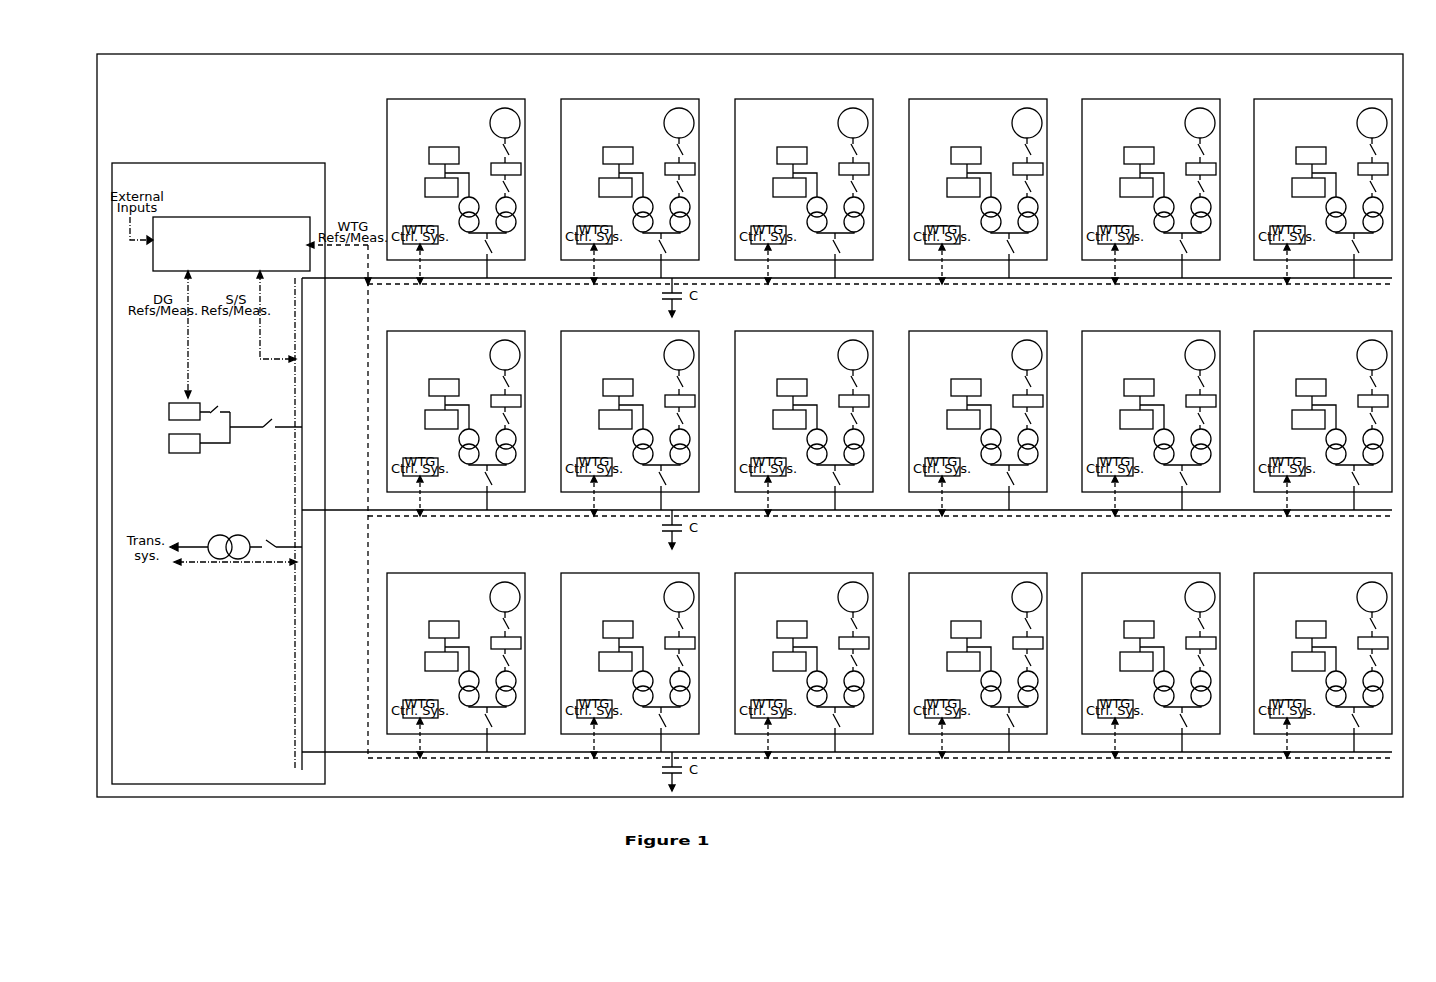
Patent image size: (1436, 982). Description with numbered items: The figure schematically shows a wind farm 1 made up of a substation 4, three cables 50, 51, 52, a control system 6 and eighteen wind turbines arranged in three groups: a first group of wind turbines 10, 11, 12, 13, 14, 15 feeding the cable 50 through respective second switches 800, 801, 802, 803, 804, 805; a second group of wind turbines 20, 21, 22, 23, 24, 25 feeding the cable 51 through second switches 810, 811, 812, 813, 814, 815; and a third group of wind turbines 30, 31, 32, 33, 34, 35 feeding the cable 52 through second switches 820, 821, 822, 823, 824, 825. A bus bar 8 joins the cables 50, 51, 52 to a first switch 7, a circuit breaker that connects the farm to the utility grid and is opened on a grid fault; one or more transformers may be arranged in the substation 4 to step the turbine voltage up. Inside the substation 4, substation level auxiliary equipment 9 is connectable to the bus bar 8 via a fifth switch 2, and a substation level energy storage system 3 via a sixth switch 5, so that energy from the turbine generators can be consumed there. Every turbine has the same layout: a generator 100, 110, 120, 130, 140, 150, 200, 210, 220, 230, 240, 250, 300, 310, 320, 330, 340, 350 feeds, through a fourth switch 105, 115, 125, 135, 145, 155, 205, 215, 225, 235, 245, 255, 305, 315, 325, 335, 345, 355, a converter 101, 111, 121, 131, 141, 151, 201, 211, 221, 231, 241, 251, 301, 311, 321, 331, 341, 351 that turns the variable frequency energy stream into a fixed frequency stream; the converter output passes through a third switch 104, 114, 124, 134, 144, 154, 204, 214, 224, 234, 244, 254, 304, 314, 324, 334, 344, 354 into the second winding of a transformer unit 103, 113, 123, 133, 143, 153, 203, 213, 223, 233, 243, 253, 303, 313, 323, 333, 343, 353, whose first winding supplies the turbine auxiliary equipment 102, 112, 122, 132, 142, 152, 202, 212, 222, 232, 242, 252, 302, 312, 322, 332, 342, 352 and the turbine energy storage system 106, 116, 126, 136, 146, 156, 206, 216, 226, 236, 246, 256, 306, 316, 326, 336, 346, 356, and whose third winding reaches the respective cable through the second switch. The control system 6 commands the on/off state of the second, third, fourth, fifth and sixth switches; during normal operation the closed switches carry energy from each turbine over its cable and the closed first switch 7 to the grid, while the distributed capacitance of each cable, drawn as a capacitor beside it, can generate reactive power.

The wind farm 1 is at (1058, 55).
The fifth switch 2 is at (266, 437).
The substation level energy storage system 3 is at (169, 443).
The substation 4 is at (233, 163).
The sixth switch 5 is at (209, 407).
The control system 6 is at (154, 262).
The first switch 7 is at (270, 556).
The bus bar 8 is at (295, 387).
The substation level auxiliary equipment 9 is at (169, 412).
The cable 50 is at (330, 279).
The cable 51 is at (328, 511).
The cable 52 is at (335, 752).
The wind turbine 10 is at (456, 164).
The wind turbine 11 is at (630, 164).
The wind turbine 12 is at (804, 164).
The wind turbine 13 is at (978, 164).
The wind turbine 14 is at (1151, 164).
The wind turbine 15 is at (1323, 164).
The wind turbine 20 is at (456, 396).
The wind turbine 21 is at (630, 396).
The wind turbine 22 is at (804, 396).
The wind turbine 23 is at (978, 396).
The wind turbine 24 is at (1151, 396).
The wind turbine 25 is at (1323, 396).
The wind turbine 30 is at (456, 638).
The wind turbine 31 is at (630, 638).
The wind turbine 32 is at (804, 638).
The wind turbine 33 is at (978, 638).
The wind turbine 34 is at (1151, 638).
The wind turbine 35 is at (1323, 638).
The generator 100 is at (492, 123).
The converter 101 is at (490, 167).
The auxiliary equipment 102 is at (425, 185).
The transformer unit 103 is at (487, 214).
The third switch 104 is at (489, 186).
The fourth switch 105 is at (489, 150).
The energy storage system 106 is at (428, 155).
The generator 110 is at (666, 123).
The converter 111 is at (664, 167).
The auxiliary equipment 112 is at (599, 185).
The transformer unit 113 is at (661, 214).
The third switch 114 is at (663, 186).
The fourth switch 115 is at (663, 150).
The energy storage system 116 is at (602, 155).
The generator 120 is at (840, 123).
The converter 121 is at (838, 167).
The auxiliary equipment 122 is at (773, 185).
The transformer unit 123 is at (835, 214).
The third switch 124 is at (837, 186).
The fourth switch 125 is at (837, 150).
The energy storage system 126 is at (776, 155).
The generator 130 is at (1014, 123).
The converter 131 is at (1012, 167).
The auxiliary equipment 132 is at (947, 185).
The transformer unit 133 is at (1009, 214).
The third switch 134 is at (1011, 186).
The fourth switch 135 is at (1011, 150).
The energy storage system 136 is at (950, 155).
The generator 140 is at (1187, 123).
The converter 141 is at (1185, 167).
The auxiliary equipment 142 is at (1120, 185).
The transformer unit 143 is at (1182, 214).
The third switch 144 is at (1184, 186).
The fourth switch 145 is at (1184, 150).
The energy storage system 146 is at (1123, 155).
The generator 150 is at (1359, 123).
The converter 151 is at (1357, 167).
The auxiliary equipment 152 is at (1292, 185).
The transformer unit 153 is at (1354, 214).
The third switch 154 is at (1356, 186).
The fourth switch 155 is at (1356, 150).
The energy storage system 156 is at (1295, 155).
The generator 200 is at (492, 355).
The converter 201 is at (490, 399).
The auxiliary equipment 202 is at (425, 417).
The transformer unit 203 is at (487, 446).
The third switch 204 is at (489, 418).
The fourth switch 205 is at (489, 382).
The energy storage system 206 is at (428, 387).
The generator 210 is at (666, 355).
The converter 211 is at (664, 399).
The auxiliary equipment 212 is at (599, 417).
The transformer unit 213 is at (661, 446).
The third switch 214 is at (663, 418).
The fourth switch 215 is at (663, 382).
The energy storage system 216 is at (602, 387).
The generator 220 is at (840, 355).
The converter 221 is at (838, 399).
The auxiliary equipment 222 is at (773, 417).
The transformer unit 223 is at (835, 446).
The third switch 224 is at (837, 418).
The fourth switch 225 is at (837, 382).
The energy storage system 226 is at (776, 387).
The generator 230 is at (1014, 355).
The converter 231 is at (1012, 399).
The auxiliary equipment 232 is at (947, 417).
The transformer unit 233 is at (1009, 446).
The third switch 234 is at (1011, 418).
The fourth switch 235 is at (1011, 382).
The energy storage system 236 is at (950, 387).
The generator 240 is at (1187, 355).
The converter 241 is at (1185, 399).
The auxiliary equipment 242 is at (1120, 417).
The transformer unit 243 is at (1182, 446).
The third switch 244 is at (1184, 418).
The fourth switch 245 is at (1184, 382).
The energy storage system 246 is at (1123, 387).
The generator 250 is at (1359, 355).
The converter 251 is at (1357, 399).
The auxiliary equipment 252 is at (1292, 417).
The transformer unit 253 is at (1354, 446).
The third switch 254 is at (1356, 418).
The fourth switch 255 is at (1356, 382).
The energy storage system 256 is at (1295, 387).
The generator 300 is at (492, 597).
The converter 301 is at (490, 641).
The auxiliary equipment 302 is at (425, 659).
The transformer unit 303 is at (487, 688).
The third switch 304 is at (489, 660).
The fourth switch 305 is at (489, 624).
The energy storage system 306 is at (428, 629).
The generator 310 is at (666, 597).
The converter 311 is at (664, 641).
The auxiliary equipment 312 is at (599, 659).
The transformer unit 313 is at (661, 688).
The third switch 314 is at (663, 660).
The fourth switch 315 is at (663, 624).
The energy storage system 316 is at (602, 629).
The generator 320 is at (840, 597).
The converter 321 is at (838, 641).
The auxiliary equipment 322 is at (773, 659).
The transformer unit 323 is at (835, 688).
The third switch 324 is at (837, 660).
The fourth switch 325 is at (837, 624).
The energy storage system 326 is at (776, 629).
The generator 330 is at (1014, 597).
The converter 331 is at (1012, 641).
The auxiliary equipment 332 is at (947, 659).
The transformer unit 333 is at (1009, 688).
The third switch 334 is at (1011, 660).
The fourth switch 335 is at (1011, 624).
The energy storage system 336 is at (950, 629).
The generator 340 is at (1187, 597).
The converter 341 is at (1185, 641).
The auxiliary equipment 342 is at (1120, 659).
The transformer unit 343 is at (1182, 688).
The third switch 344 is at (1184, 660).
The fourth switch 345 is at (1184, 624).
The energy storage system 346 is at (1123, 629).
The generator 350 is at (1359, 597).
The converter 351 is at (1357, 641).
The auxiliary equipment 352 is at (1292, 659).
The transformer unit 353 is at (1354, 688).
The third switch 354 is at (1356, 660).
The fourth switch 355 is at (1356, 624).
The energy storage system 356 is at (1295, 629).
The second switch 800 is at (470, 255).
The second switch 801 is at (644, 255).
The second switch 802 is at (818, 255).
The second switch 803 is at (992, 255).
The second switch 804 is at (1165, 255).
The second switch 805 is at (1337, 255).
The second switch 810 is at (470, 487).
The second switch 811 is at (644, 487).
The second switch 812 is at (818, 487).
The second switch 813 is at (992, 487).
The second switch 814 is at (1165, 487).
The second switch 815 is at (1337, 487).
The second switch 820 is at (470, 729).
The second switch 821 is at (644, 729).
The second switch 822 is at (818, 729).
The second switch 823 is at (992, 729).
The second switch 824 is at (1165, 729).
The second switch 825 is at (1337, 729).